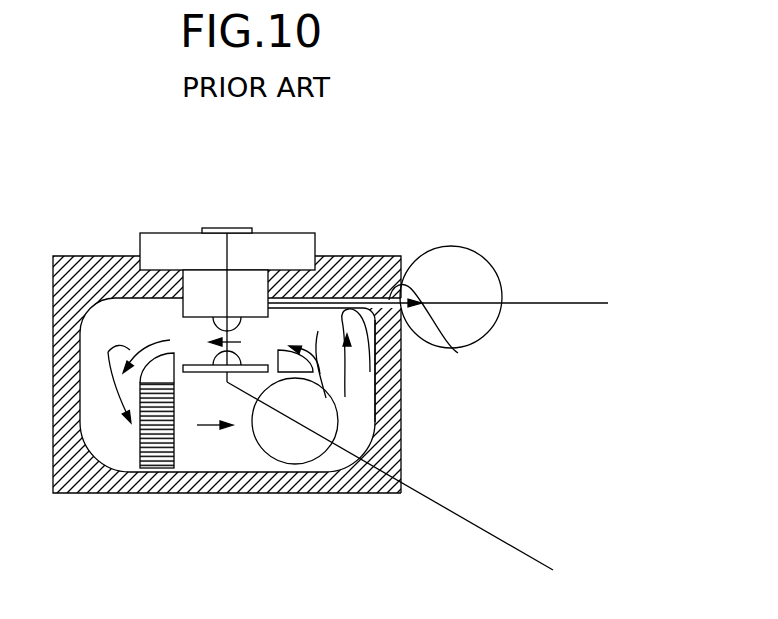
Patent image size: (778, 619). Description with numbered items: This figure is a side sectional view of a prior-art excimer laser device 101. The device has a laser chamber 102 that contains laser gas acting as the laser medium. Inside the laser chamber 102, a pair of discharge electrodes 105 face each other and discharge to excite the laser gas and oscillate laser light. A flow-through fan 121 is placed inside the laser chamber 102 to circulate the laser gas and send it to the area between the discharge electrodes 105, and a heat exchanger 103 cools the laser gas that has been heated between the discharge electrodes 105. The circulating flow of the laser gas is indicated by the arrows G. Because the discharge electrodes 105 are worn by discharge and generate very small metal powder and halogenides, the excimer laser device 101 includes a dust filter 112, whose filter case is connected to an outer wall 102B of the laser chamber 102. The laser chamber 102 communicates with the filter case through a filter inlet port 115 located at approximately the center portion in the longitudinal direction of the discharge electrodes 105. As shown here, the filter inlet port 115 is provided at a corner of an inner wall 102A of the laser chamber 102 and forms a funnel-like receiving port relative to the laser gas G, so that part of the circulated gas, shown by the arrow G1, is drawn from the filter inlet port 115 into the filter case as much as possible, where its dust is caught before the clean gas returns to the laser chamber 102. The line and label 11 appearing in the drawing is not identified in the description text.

The excimer laser device 101 is at (285, 307).
The laser chamber 102 is at (285, 345).
The inner wall 102A is at (383, 417).
The outer wall 102B is at (372, 404).
The heat exchanger 103 is at (176, 438).
The discharge electrodes 105 is at (209, 353).
The dust filter 112 is at (483, 253).
The filter inlet port 115 is at (458, 353).
The flow-through fan 121 is at (316, 453).
The axis / sight line 11 is at (598, 316).
The laser gas flow G is at (207, 364).
The laser gas drawn into filter G1 is at (357, 372).